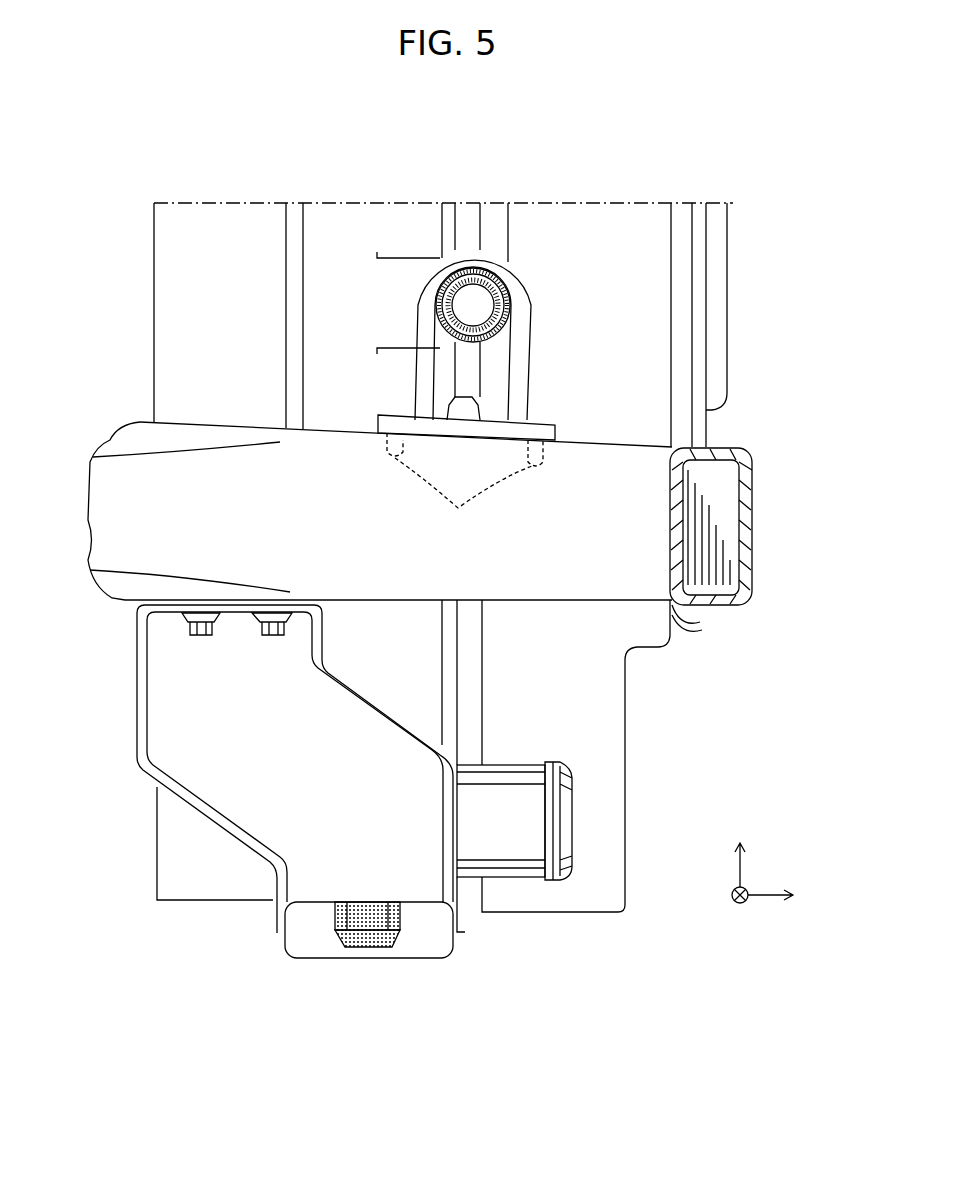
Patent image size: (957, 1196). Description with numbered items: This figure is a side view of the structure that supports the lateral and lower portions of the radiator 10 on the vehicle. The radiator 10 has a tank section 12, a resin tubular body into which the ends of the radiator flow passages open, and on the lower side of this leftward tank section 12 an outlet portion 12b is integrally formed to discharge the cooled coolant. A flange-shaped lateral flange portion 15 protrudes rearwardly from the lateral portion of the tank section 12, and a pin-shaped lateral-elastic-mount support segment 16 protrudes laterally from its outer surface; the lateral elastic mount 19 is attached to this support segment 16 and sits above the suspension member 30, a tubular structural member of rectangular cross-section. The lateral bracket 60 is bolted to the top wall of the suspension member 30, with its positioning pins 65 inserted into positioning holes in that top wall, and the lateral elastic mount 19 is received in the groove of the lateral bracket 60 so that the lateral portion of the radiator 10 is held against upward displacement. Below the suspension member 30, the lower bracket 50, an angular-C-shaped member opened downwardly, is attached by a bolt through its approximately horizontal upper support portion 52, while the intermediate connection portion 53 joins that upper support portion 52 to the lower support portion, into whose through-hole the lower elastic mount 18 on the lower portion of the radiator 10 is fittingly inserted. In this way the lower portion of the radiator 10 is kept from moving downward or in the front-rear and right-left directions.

The radiator 10 is at (656, 890).
The tank section 12 is at (325, 243).
The outlet portion 12b is at (515, 800).
The lateral flange portion 15 is at (413, 305).
The lateral-elastic-mount support segment 16 is at (472, 305).
The lower elastic mount 18 is at (370, 925).
The lateral elastic mount 19 is at (492, 272).
The suspension member 30 is at (742, 515).
The lower bracket 50 is at (265, 820).
The upper support portion 52 is at (170, 612).
The intermediate connection portion 53 is at (135, 738).
The lateral bracket 60 is at (515, 285).
The positioning pin 65 is at (465, 486).